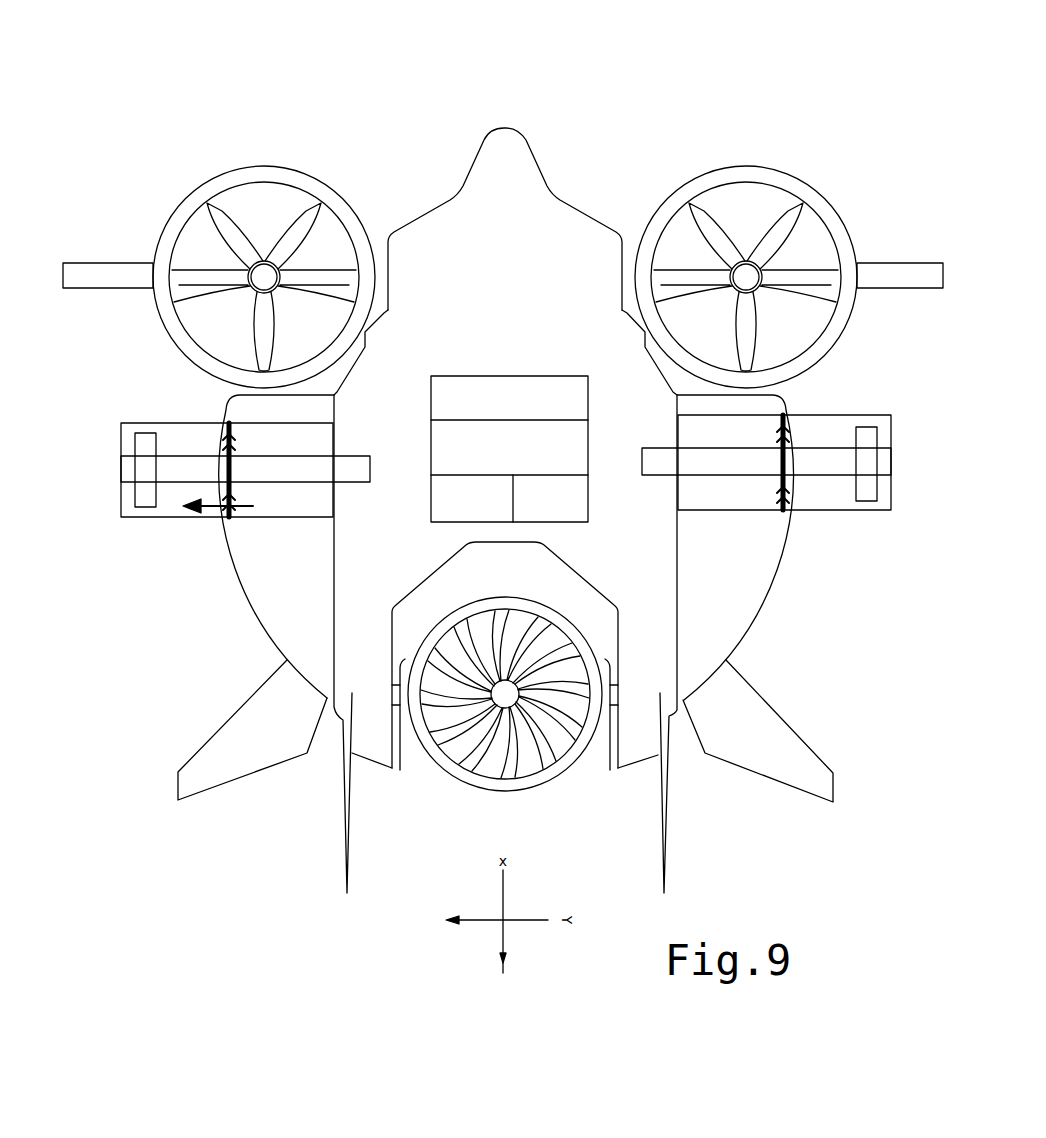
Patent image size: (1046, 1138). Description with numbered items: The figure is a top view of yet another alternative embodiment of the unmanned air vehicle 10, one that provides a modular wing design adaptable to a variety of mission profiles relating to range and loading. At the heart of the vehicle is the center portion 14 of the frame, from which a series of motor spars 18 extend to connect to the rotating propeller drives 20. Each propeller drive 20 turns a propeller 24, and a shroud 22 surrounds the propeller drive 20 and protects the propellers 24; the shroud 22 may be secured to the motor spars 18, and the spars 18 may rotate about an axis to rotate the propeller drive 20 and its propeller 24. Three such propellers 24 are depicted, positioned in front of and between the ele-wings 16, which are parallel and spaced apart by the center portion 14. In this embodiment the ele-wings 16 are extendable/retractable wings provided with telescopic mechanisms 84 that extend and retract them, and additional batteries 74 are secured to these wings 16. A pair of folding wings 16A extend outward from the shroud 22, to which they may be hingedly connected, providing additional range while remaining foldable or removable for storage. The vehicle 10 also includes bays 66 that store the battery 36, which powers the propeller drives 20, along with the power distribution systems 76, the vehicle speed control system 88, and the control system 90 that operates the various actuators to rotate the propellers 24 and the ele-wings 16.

The unmanned air vehicle 10 is at (262, 70).
The center portion 14 is at (487, 140).
The ele-wings 16 is at (272, 623).
The folding wings 16A is at (97, 270).
The motor spars 18 is at (393, 703).
The propeller drives 20 is at (264, 273).
The shroud 22 is at (325, 195).
The propellers 24 is at (217, 213).
The battery 36 is at (509, 456).
The bays 66 is at (509, 417).
The additional batteries 74 is at (145, 500).
The power distribution systems 76 is at (509, 403).
The telescopic mechanisms 84 is at (297, 477).
The vehicle speed control system 88 is at (551, 499).
The control system 90 is at (485, 498).